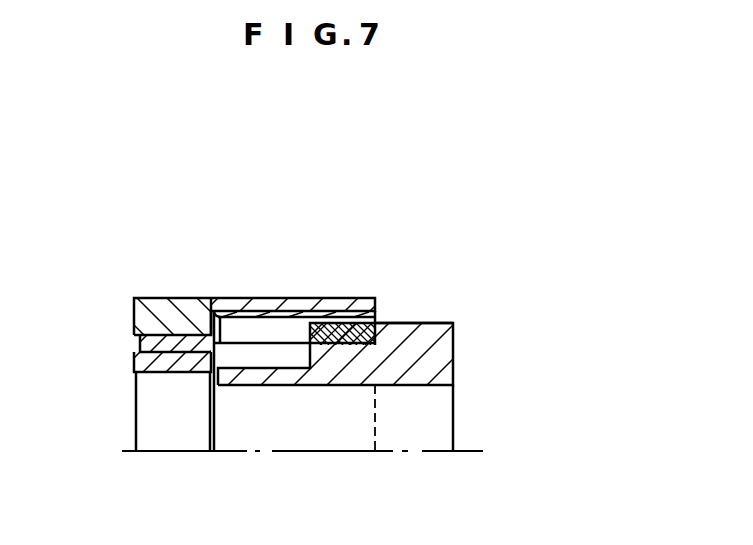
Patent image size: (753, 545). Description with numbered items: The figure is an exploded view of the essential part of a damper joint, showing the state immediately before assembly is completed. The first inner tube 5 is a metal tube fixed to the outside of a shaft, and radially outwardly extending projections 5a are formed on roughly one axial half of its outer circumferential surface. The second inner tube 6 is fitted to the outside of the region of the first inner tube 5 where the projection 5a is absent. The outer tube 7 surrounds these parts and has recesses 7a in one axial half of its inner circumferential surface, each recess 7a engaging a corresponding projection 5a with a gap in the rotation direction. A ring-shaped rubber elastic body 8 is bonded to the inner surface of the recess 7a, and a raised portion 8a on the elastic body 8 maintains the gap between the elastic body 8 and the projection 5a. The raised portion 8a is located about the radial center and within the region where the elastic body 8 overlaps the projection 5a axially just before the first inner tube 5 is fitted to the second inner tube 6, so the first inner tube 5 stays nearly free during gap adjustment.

The first inner tube 5 is at (453, 340).
The projection 5a is at (423, 325).
The second inner tube 6 is at (136, 375).
The outer tube 7 is at (163, 313).
The recess 7a is at (273, 317).
The elastic body 8 is at (140, 342).
The raised portion 8a is at (343, 323).